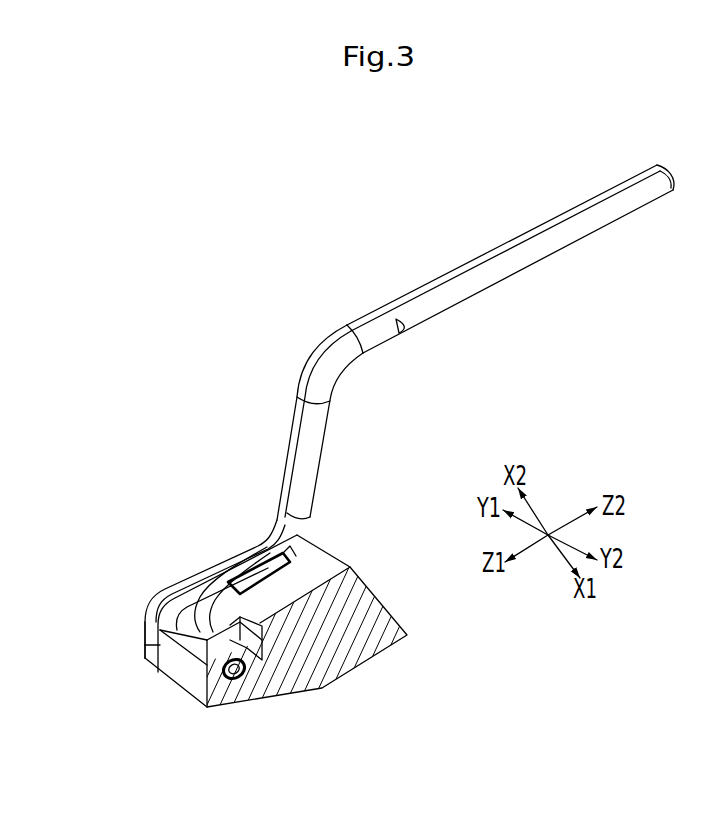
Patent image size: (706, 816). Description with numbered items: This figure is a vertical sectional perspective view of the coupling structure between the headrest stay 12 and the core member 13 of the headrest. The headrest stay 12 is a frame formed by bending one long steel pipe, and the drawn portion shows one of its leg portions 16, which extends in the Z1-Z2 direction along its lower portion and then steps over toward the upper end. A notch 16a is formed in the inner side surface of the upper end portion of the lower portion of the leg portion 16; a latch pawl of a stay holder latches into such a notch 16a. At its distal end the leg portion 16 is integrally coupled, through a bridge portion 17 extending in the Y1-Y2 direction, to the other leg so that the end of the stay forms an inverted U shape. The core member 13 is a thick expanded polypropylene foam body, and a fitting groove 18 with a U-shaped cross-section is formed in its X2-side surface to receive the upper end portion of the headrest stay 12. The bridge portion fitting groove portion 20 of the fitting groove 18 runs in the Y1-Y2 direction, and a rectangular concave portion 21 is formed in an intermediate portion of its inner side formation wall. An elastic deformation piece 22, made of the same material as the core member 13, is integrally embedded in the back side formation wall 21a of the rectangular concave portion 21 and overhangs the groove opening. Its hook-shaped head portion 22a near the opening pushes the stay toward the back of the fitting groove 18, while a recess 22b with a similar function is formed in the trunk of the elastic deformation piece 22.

The headrest stay 12 is at (398, 263).
The core member 13 is at (162, 572).
The leg portion 16 is at (525, 258).
The notch 16a is at (407, 328).
The bridge portion 17 is at (165, 668).
The fitting groove 18 is at (173, 604).
The bridge portion fitting groove portion 20 is at (207, 617).
The rectangular concave portion 21 is at (256, 570).
The back side formation wall 21a is at (258, 650).
The elastic deformation piece 22 is at (247, 663).
The hook-shaped head portion 22a is at (216, 632).
The recess 22b is at (224, 682).